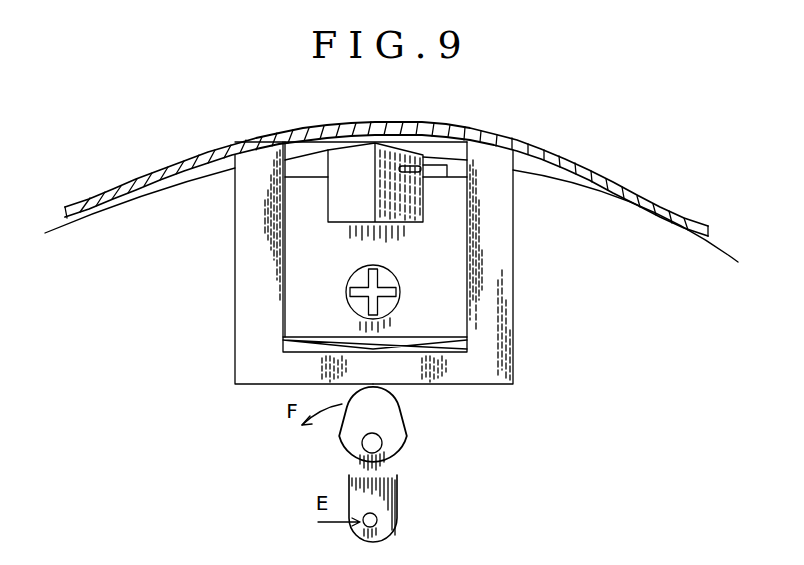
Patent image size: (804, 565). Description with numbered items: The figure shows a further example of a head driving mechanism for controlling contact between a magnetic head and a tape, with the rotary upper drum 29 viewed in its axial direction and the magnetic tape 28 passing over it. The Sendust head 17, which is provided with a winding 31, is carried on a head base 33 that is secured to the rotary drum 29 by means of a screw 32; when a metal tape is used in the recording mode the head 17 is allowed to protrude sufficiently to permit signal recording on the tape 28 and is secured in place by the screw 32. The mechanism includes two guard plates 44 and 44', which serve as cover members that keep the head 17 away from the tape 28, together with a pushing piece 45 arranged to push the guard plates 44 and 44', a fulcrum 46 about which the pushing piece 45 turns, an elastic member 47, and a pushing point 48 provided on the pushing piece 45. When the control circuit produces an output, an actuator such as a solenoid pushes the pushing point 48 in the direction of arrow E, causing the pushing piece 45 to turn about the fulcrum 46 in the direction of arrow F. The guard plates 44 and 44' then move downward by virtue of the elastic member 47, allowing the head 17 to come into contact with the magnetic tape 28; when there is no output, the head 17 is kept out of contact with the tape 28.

The Sendust head 17 is at (393, 153).
The magnetic tape 28 is at (630, 192).
The rotary upper drum 29 is at (712, 253).
The winding 31 is at (438, 160).
The screw 32 is at (358, 273).
The head base 33 is at (302, 187).
The guard plate 44 is at (473, 263).
The guard plate 44' is at (317, 263).
The pushing piece 45 is at (390, 460).
The fulcrum 46 is at (379, 437).
The elastic member 47 is at (443, 340).
The pushing point 48 is at (378, 520).